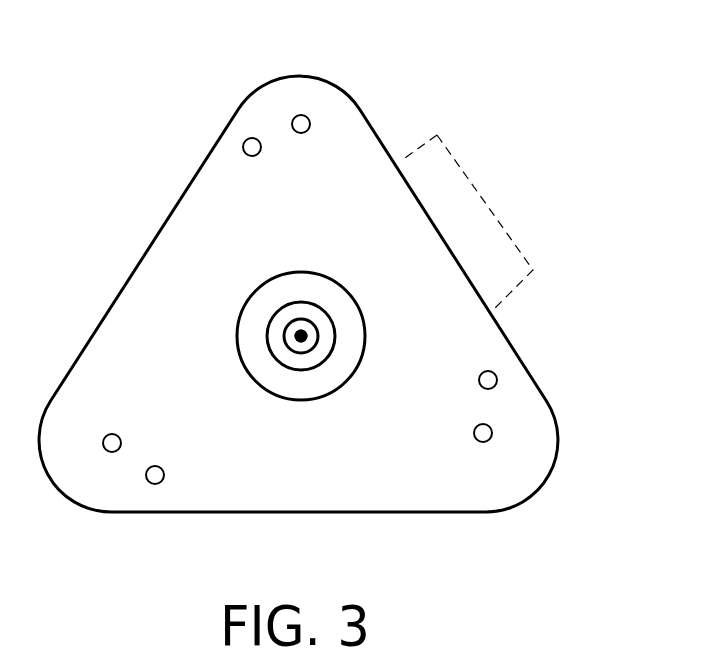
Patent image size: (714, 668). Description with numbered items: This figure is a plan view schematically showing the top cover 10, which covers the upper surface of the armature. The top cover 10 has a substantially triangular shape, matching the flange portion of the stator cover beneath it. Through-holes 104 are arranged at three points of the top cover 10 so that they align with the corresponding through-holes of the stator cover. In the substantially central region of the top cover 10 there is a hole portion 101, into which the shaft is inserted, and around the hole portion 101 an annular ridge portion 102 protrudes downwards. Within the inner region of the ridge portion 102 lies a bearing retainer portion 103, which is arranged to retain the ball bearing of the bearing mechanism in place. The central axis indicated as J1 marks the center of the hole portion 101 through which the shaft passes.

The top cover 10 is at (63, 107).
The hole portion 101 is at (299, 344).
The annular ridge portion 102 is at (257, 355).
The bearing retainer portion 103 is at (318, 353).
The through-holes 104 is at (249, 139).
The first joint axis J1 is at (307, 337).